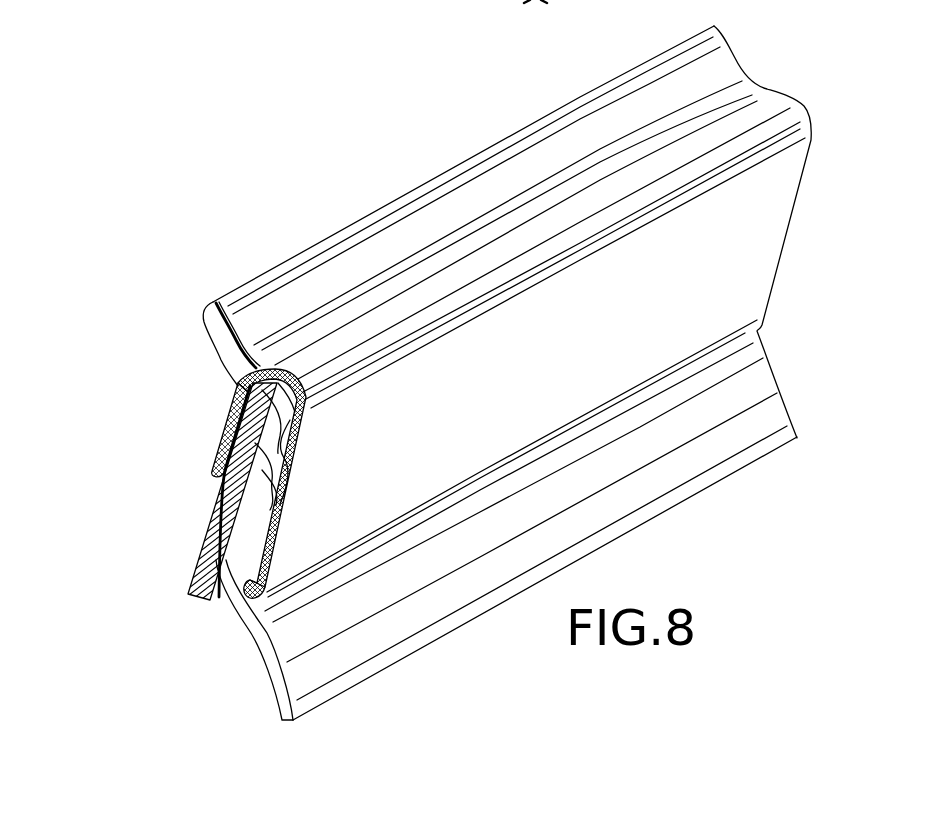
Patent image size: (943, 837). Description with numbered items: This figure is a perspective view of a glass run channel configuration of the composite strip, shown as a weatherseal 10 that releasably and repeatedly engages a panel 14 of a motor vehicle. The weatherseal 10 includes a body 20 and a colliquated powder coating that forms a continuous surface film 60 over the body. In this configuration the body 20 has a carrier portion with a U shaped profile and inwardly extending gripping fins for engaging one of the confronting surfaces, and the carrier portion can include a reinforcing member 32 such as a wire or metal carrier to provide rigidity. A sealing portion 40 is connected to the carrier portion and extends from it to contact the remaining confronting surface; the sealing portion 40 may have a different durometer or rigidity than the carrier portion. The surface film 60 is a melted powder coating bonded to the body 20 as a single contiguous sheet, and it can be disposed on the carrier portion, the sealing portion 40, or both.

The weatherseal 10 is at (118, 328).
The panel 14 is at (210, 540).
The body 20 is at (208, 433).
The reinforcing member 32 is at (297, 443).
The sealing portion 40 is at (218, 335).
The surface film 60 is at (252, 312).